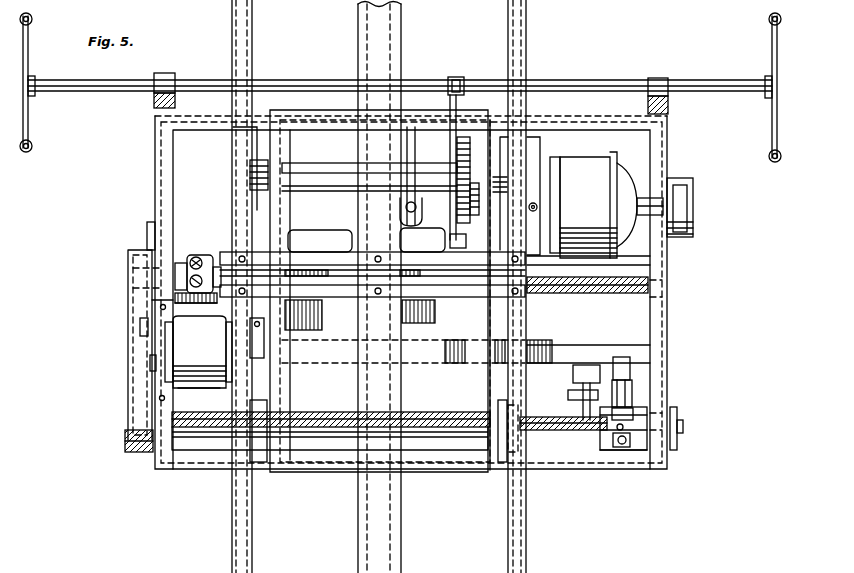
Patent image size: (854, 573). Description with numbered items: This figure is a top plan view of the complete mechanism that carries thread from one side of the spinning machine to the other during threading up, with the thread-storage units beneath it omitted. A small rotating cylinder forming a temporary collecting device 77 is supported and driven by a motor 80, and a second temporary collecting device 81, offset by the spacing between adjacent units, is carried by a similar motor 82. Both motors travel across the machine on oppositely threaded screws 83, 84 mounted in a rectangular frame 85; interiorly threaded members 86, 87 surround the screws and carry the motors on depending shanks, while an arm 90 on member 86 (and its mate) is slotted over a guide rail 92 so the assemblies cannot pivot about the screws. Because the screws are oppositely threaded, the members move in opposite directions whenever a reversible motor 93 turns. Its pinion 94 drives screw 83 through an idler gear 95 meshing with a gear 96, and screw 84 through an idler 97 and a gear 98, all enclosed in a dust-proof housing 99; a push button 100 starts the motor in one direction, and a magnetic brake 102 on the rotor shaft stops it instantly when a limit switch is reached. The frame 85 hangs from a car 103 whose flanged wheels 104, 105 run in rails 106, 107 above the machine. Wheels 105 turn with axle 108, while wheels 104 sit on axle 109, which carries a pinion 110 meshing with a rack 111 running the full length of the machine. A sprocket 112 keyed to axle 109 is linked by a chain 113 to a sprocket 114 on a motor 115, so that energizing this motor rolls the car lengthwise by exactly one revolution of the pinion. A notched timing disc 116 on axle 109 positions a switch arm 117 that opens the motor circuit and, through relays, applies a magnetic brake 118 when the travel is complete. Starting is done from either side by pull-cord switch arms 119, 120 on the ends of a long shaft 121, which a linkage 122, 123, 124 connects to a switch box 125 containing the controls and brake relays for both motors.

The temporary collecting device 77 is at (576, 376).
The motor 80 is at (652, 405).
The temporary collecting device 81 is at (156, 233).
The motor 82 is at (186, 257).
The threaded screw 83 is at (562, 405).
The threaded screw 84 is at (596, 293).
The rectangular frame 85 is at (672, 327).
The interiorly threaded member 86 is at (603, 435).
The interiorly threaded member 87 is at (206, 270).
The arm 90 is at (660, 378).
The guide rail 92 is at (585, 341).
The reversible motor 93 is at (213, 347).
The pinion 94 is at (130, 362).
The idler gear 95 is at (135, 400).
The gear 96 is at (122, 435).
The idler 97 is at (135, 333).
The gear 98 is at (130, 263).
The dust-proof housing 99 is at (130, 296).
The push button 100 is at (684, 428).
The magnetic brake 102 is at (283, 333).
The car 103 is at (342, 104).
The flanged wheels 104 is at (253, 133).
The flanged wheels 105 is at (258, 470).
The rail 106 is at (248, 44).
The rail 107 is at (527, 48).
The axle 108 is at (437, 440).
The axle 109 is at (347, 170).
The pinion 110 is at (362, 192).
The rack 111 is at (392, 47).
The sprocket 112 is at (465, 135).
The chain 113 is at (458, 192).
The sprocket 114 is at (468, 240).
The motor 115 is at (606, 205).
The timing disc 116 is at (408, 133).
The switch arm 117 is at (425, 213).
The magnetic brake 118 is at (678, 178).
The switch arm 119 is at (28, 53).
The switch arm 120 is at (28, 127).
The shaft 121 is at (618, 80).
The linkage 122 is at (456, 78).
The linkage 123 is at (450, 154).
The linkage 124 is at (450, 243).
The switch box 125 is at (338, 225).